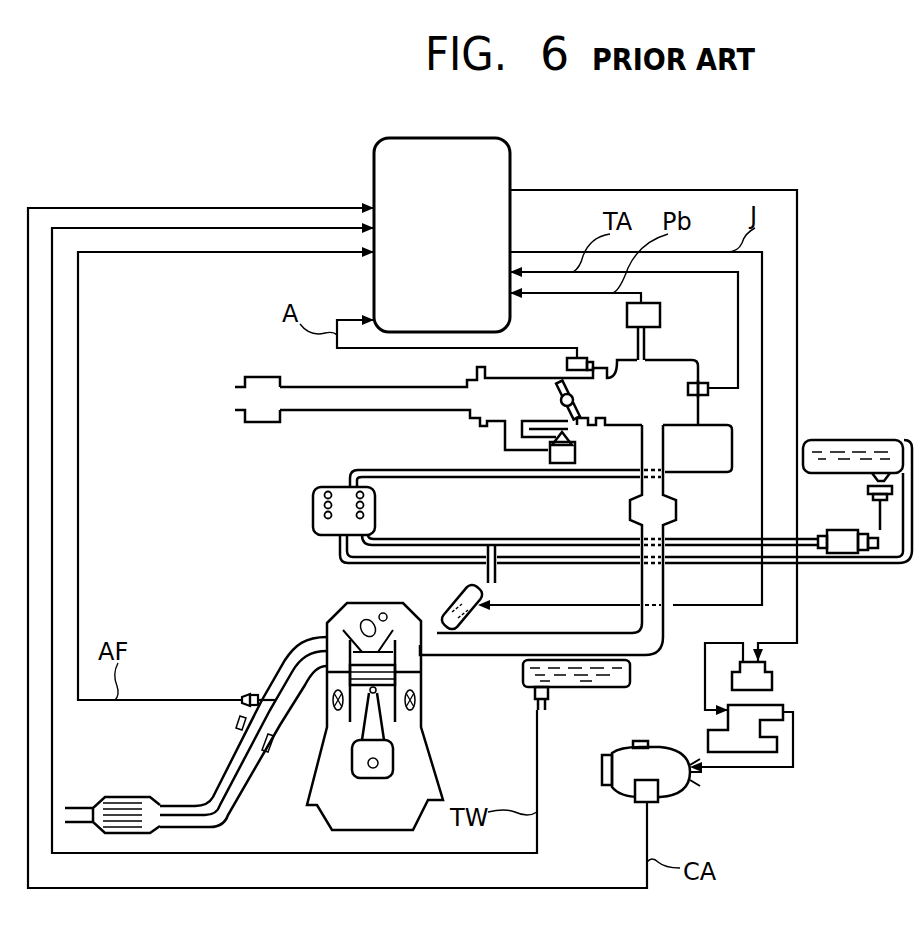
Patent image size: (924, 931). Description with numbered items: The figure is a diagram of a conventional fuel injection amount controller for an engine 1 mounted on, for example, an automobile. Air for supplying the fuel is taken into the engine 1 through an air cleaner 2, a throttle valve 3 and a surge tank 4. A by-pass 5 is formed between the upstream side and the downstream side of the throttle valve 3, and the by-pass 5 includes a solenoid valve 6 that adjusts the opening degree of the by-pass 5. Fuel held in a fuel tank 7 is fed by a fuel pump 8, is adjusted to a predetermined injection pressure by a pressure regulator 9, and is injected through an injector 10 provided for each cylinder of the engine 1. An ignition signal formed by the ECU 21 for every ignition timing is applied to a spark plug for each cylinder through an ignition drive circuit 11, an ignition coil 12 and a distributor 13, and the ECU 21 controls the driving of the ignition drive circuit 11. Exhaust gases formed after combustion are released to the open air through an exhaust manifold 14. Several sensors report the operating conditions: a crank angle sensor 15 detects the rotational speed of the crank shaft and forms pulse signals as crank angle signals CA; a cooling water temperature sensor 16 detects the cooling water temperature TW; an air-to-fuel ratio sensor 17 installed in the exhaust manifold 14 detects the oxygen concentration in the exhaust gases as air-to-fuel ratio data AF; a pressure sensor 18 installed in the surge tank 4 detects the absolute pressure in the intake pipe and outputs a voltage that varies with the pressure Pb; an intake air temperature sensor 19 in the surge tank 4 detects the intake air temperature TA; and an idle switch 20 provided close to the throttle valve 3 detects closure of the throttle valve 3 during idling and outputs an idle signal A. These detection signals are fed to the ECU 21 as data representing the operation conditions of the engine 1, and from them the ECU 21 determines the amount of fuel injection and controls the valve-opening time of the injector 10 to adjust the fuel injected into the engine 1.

The engine 1 is at (437, 766).
The air cleaner 2 is at (250, 422).
The throttle valve 3 is at (582, 412).
The surge tank 4 is at (667, 362).
The by-pass 5 is at (503, 450).
The solenoid valve 6 is at (578, 462).
The fuel tank 7 is at (876, 440).
The fuel pump 8 is at (833, 530).
The pressure regulator 9 is at (378, 508).
The injector 10 is at (455, 602).
The ignition drive circuit 11 is at (772, 681).
The ignition coil 12 is at (780, 705).
The distributor 13 is at (643, 745).
The exhaust manifold 14 is at (292, 645).
The crank angle sensor 15 is at (645, 803).
The cooling water temperature sensor 16 is at (547, 713).
The air-to-fuel ratio sensor 17 is at (245, 697).
The pressure sensor 18 is at (660, 316).
The intake air temperature sensor 19 is at (712, 392).
The idle switch 20 is at (578, 357).
The ECU 21 is at (510, 168).